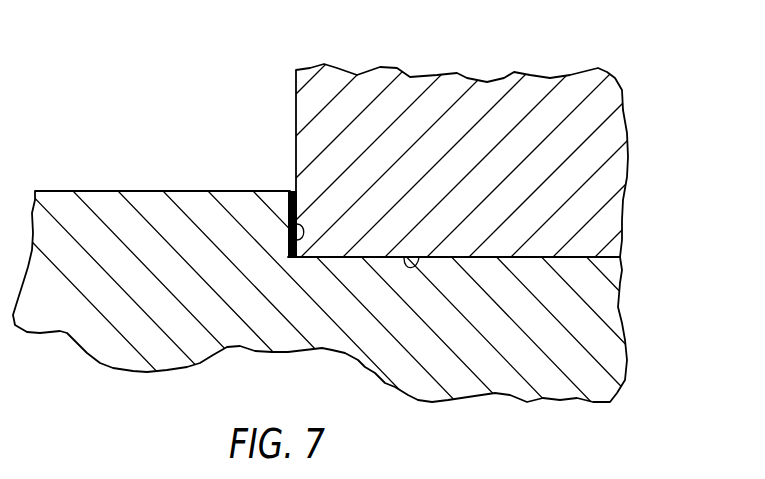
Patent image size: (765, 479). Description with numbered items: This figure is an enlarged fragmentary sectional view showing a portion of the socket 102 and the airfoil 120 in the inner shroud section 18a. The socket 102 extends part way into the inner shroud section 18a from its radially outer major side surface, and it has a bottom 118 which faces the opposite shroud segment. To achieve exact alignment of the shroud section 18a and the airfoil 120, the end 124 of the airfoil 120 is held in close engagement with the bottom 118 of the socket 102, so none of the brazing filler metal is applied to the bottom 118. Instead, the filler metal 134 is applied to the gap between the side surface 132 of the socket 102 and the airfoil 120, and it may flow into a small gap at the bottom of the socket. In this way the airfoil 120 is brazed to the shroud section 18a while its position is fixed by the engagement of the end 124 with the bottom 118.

The inner shroud section 18a is at (105, 192).
The airfoil 120 is at (615, 94).
The bottom surface of socket 118 is at (503, 257).
The filler metal 134 is at (289, 191).
The side surface of socket 132 is at (288, 253).
The end of airfoil 124 is at (419, 257).
The socket 102 is at (578, 256).